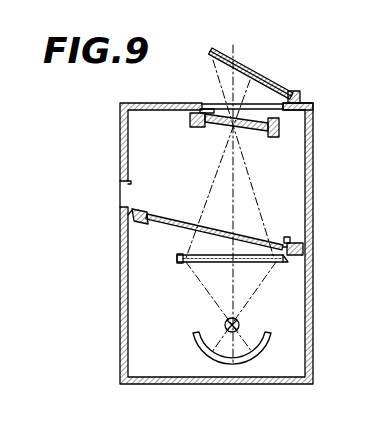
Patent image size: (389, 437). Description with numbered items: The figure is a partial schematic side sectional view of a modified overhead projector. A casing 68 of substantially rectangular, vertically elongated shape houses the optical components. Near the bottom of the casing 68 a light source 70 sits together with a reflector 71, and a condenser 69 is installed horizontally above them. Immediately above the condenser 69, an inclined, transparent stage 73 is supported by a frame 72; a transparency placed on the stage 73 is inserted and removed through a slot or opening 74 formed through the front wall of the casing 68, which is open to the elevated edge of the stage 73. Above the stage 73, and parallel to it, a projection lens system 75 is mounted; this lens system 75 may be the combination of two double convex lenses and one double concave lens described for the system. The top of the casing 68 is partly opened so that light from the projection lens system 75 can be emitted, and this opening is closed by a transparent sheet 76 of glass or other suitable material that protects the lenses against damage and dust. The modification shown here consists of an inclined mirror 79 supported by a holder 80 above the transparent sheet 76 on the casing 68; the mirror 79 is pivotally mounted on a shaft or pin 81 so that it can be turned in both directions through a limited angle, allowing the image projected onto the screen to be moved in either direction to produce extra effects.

The casing 68 is at (312, 140).
The condenser 69 is at (273, 263).
The light source 70 is at (240, 323).
The reflector 71 is at (245, 356).
The frame 72 is at (304, 246).
The transparent stage 73 is at (176, 221).
The slot or opening 74 is at (122, 205).
The projection lens system 75 is at (257, 133).
The transparent sheet 76 is at (205, 103).
The inclined mirror 79 is at (215, 60).
The holder 80 is at (296, 95).
The shaft or pin 81 is at (311, 107).